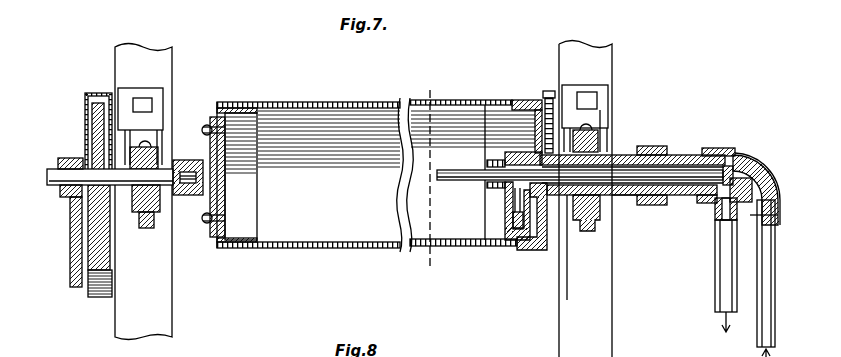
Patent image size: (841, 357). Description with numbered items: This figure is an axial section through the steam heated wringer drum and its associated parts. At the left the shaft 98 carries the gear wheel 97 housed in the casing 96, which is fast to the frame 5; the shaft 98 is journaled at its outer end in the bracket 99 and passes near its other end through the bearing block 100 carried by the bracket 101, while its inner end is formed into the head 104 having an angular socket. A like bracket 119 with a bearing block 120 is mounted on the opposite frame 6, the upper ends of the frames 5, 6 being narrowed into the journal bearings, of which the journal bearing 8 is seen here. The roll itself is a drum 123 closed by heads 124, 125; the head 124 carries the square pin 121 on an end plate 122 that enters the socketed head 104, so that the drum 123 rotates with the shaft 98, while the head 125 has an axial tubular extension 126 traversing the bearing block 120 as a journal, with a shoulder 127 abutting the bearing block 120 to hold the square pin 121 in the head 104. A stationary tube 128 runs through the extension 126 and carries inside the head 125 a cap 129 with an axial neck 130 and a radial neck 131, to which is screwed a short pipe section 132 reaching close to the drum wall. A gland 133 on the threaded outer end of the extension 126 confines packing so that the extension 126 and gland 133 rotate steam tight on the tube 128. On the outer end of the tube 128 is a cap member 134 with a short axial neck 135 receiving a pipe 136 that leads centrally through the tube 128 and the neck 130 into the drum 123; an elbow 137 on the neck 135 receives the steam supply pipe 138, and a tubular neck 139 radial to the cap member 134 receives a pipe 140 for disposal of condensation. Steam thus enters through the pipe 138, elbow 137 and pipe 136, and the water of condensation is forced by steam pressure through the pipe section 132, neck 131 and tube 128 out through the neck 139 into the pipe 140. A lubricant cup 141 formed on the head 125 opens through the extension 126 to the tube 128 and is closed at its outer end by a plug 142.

The frame 5 is at (172, 313).
The frame 6 is at (612, 338).
The journal bearing 8 is at (429, 182).
The casing 96 is at (103, 287).
The gear wheel 97 is at (92, 127).
The shaft 98 is at (52, 188).
The bracket 99 is at (72, 255).
The bearing block 100 is at (148, 200).
The bracket 101 is at (153, 137).
The head 104 is at (196, 160).
The bracket 119 is at (604, 126).
The bearing block 120 is at (585, 222).
The square pin 121 is at (205, 205).
The end plate 122 is at (215, 238).
The drum 123 is at (348, 249).
The head 124 is at (228, 195).
The head 125 is at (542, 252).
The tubular extension 126 is at (626, 197).
The shoulder 127 is at (567, 200).
The tube 128 is at (690, 156).
The cap 129 is at (520, 152).
The axial neck 130 is at (490, 163).
The radial neck 131 is at (505, 194).
The pipe section 132 is at (513, 221).
The gland 133 is at (652, 147).
The cap member 134 is at (742, 150).
The axial neck 135 is at (752, 160).
The pipe 136 is at (438, 177).
The elbow 137 is at (776, 188).
The pipe 138 is at (763, 270).
The tubular neck 139 is at (718, 222).
The pipe 140 is at (722, 275).
The lubricant cup 141 is at (565, 125).
The plug 142 is at (549, 92).